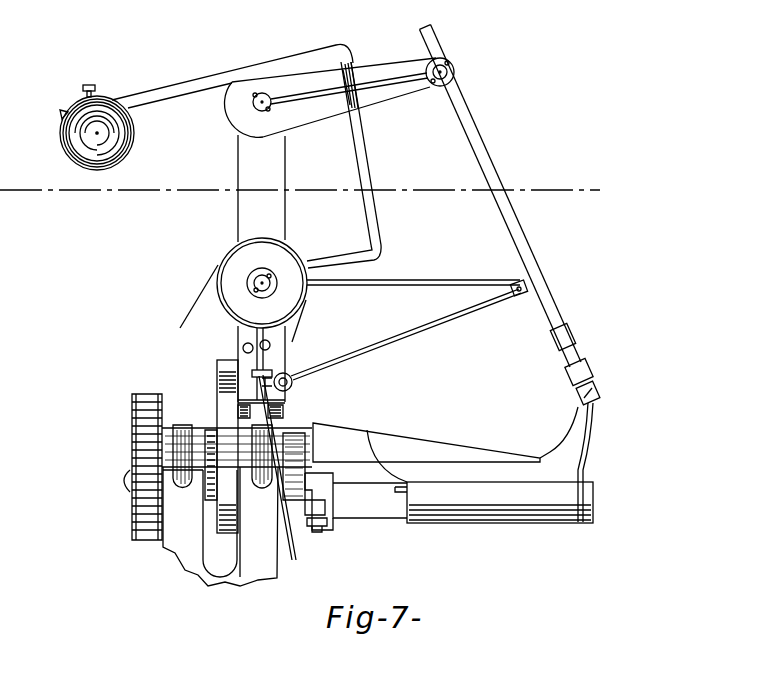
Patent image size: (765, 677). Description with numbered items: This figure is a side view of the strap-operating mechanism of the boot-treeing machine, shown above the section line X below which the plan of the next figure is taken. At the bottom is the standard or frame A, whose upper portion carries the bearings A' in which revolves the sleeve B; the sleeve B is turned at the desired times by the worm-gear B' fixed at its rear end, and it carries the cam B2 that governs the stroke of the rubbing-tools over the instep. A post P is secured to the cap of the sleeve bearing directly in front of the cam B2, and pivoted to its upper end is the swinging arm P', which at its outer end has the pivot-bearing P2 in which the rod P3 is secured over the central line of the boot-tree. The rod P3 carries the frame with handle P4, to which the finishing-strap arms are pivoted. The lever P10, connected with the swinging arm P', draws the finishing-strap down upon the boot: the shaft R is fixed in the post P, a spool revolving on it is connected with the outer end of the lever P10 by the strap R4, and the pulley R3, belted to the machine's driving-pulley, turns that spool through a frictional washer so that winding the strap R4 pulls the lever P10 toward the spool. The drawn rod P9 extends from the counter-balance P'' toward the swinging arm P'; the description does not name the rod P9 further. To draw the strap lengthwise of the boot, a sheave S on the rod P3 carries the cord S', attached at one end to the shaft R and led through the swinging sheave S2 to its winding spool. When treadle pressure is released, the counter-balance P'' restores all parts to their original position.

The section line x x X is at (22, 200).
The counter-balance P'' is at (114, 127).
The rod P9 is at (196, 78).
The lever P10 is at (366, 158).
The swinging arm P' is at (365, 71).
The pivot-bearing P2 is at (455, 72).
The post P is at (330, 238).
The rod P3 is at (501, 196).
The frame with handle P4 is at (570, 419).
The rope or cord S' is at (406, 320).
The sheave S is at (515, 276).
The swinging sheave S2 is at (293, 384).
The shaft R is at (252, 282).
The pulley R3 is at (236, 293).
The strap R4 is at (344, 253).
The cam B2 is at (222, 368).
The worm-gear B' is at (143, 455).
The bearings A' is at (247, 449).
The standard or frame A is at (220, 526).
The sleeve B is at (446, 470).